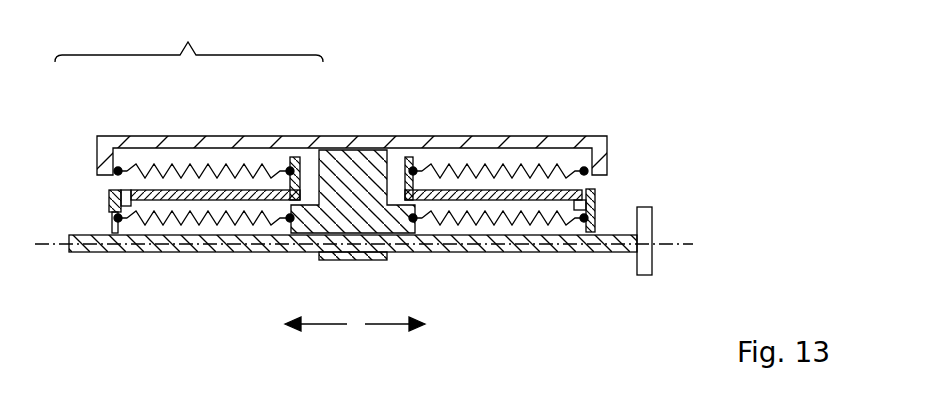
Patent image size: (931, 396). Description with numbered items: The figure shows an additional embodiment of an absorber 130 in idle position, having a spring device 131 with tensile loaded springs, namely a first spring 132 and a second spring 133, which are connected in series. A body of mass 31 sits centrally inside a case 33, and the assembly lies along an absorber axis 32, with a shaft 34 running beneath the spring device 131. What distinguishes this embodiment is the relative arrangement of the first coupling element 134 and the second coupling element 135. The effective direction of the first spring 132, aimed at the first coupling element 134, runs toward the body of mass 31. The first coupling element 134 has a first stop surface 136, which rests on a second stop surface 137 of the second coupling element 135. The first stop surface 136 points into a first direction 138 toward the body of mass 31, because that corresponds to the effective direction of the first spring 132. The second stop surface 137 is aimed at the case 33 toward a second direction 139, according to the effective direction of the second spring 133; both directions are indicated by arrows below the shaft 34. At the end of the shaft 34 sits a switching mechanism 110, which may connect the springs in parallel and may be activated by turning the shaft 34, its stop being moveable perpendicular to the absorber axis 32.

The absorber 130 is at (410, 191).
The spring device 131 is at (320, 164).
The first spring 132 is at (260, 213).
The second spring 133 is at (118, 170).
The first coupling element 134 is at (116, 212).
The second coupling element 135 is at (283, 192).
The first stop surface 136 is at (112, 207).
The second stop surface 137 is at (121, 208).
The body of mass 31 is at (343, 170).
The case 33 is at (428, 140).
The shaft 34 is at (607, 247).
The absorber axis 32 is at (667, 248).
The switching mechanism 110 is at (644, 263).
The first direction 138 is at (392, 325).
The second direction 139 is at (332, 325).